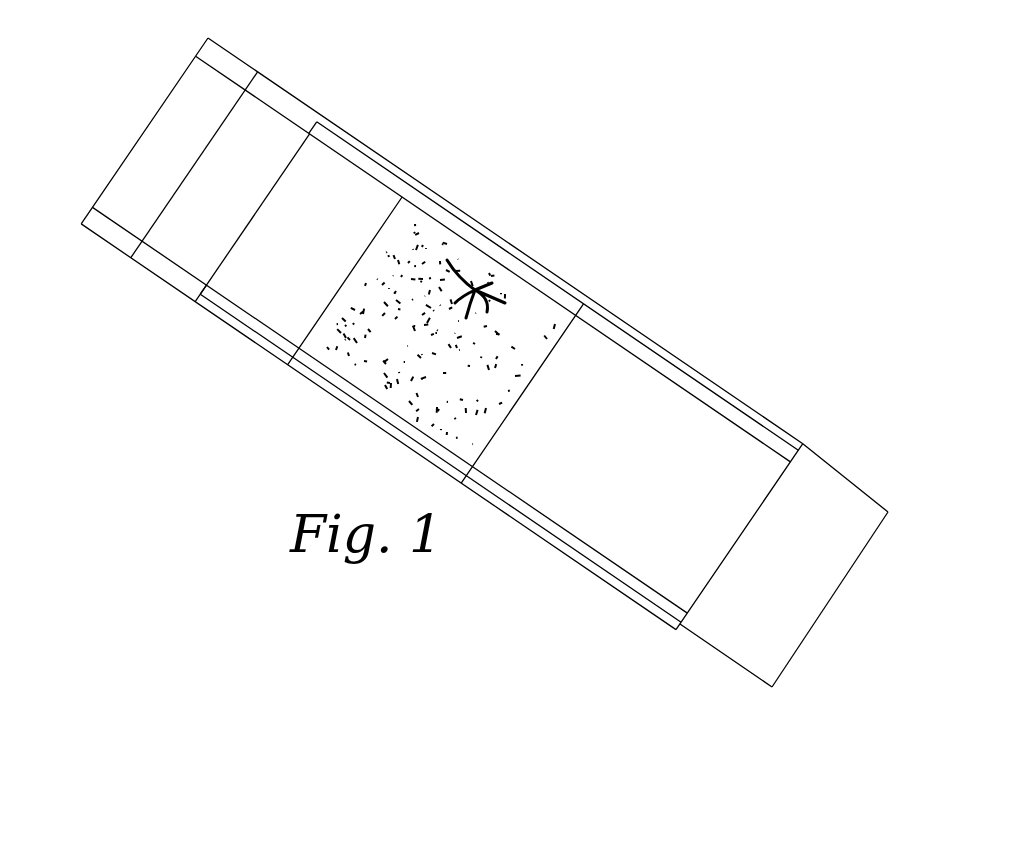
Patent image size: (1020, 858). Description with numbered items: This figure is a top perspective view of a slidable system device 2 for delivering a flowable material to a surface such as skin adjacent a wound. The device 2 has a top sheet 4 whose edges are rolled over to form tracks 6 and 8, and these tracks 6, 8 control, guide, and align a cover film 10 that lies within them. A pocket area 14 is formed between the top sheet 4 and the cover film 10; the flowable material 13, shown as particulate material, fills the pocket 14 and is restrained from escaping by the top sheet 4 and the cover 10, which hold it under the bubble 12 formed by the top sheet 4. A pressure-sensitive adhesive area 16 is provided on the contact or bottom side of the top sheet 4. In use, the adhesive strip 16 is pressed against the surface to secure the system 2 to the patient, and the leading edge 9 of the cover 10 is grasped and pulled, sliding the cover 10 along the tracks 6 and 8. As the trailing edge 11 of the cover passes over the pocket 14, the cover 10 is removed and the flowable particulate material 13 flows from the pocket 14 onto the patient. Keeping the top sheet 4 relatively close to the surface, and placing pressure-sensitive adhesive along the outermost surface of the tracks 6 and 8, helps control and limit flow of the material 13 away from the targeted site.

The slidable system device 2 is at (600, 258).
The top sheet 4 is at (627, 367).
The track 6 is at (213, 52).
The track 8 is at (98, 222).
The leading edge 9 is at (845, 588).
The cover film 10 is at (847, 493).
The trailing edge 11 is at (295, 152).
The bubble 12 is at (407, 229).
The flowable material 13 is at (474, 288).
The pocket area 14 is at (418, 383).
The pressure-sensitive adhesive area 16 is at (160, 133).